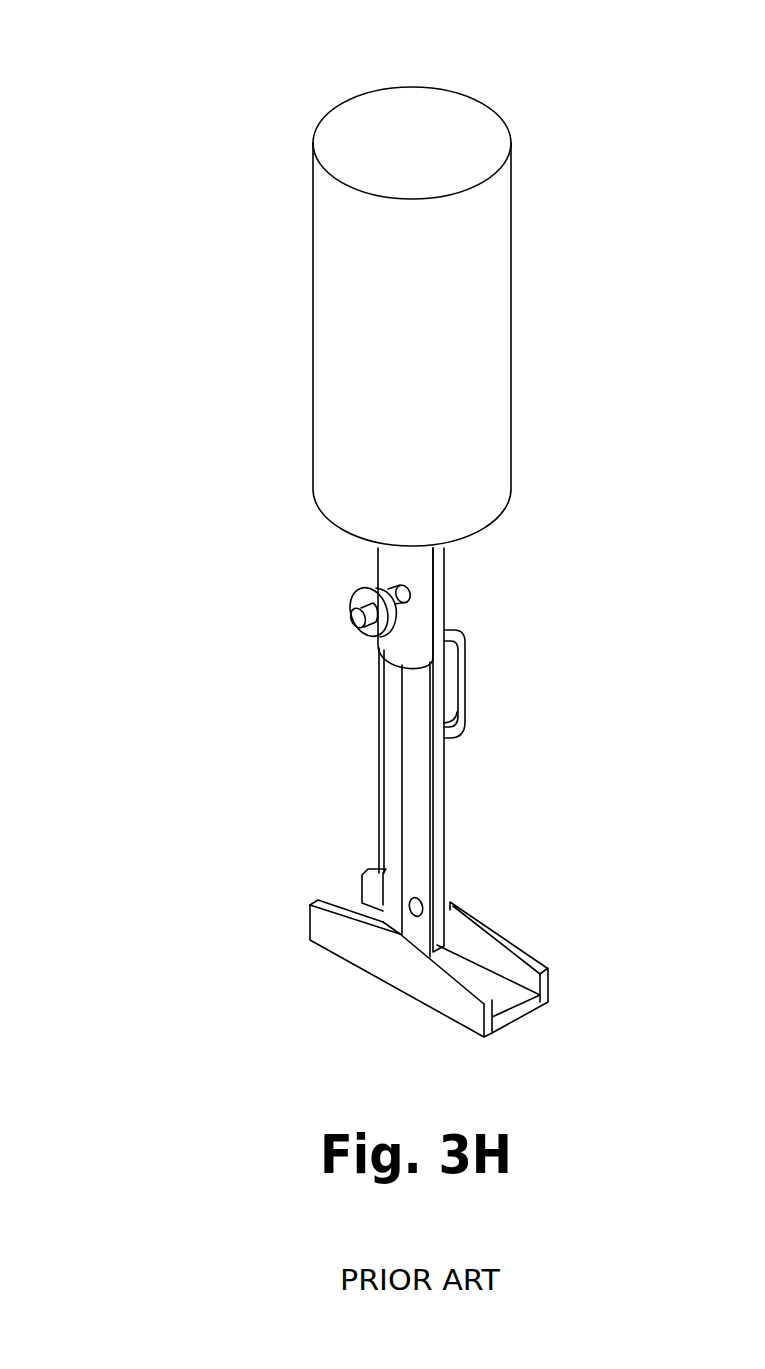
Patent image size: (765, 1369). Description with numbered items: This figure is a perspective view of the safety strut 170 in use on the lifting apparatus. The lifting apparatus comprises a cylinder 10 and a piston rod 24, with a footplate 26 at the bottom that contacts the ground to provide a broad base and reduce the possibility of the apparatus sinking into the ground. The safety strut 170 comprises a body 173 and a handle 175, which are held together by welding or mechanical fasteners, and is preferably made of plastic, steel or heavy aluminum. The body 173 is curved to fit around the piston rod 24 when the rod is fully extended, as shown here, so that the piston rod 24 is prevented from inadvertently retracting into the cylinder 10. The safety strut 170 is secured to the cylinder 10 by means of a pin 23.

The cylinder 10 is at (367, 93).
The pin 23 is at (352, 603).
The piston rod 24 is at (400, 719).
The footplate 26 is at (330, 933).
The safety strut 170 is at (530, 763).
The body 173 is at (445, 800).
The handle 175 is at (465, 655).